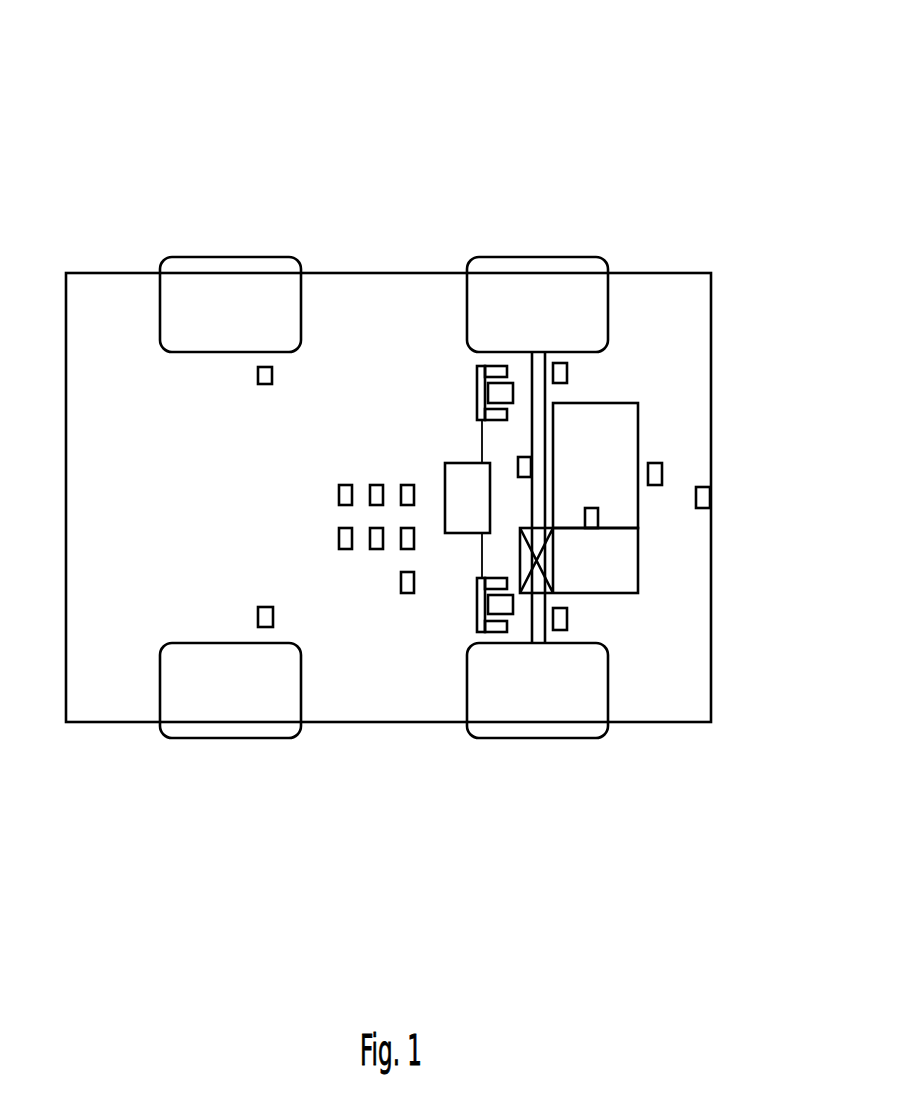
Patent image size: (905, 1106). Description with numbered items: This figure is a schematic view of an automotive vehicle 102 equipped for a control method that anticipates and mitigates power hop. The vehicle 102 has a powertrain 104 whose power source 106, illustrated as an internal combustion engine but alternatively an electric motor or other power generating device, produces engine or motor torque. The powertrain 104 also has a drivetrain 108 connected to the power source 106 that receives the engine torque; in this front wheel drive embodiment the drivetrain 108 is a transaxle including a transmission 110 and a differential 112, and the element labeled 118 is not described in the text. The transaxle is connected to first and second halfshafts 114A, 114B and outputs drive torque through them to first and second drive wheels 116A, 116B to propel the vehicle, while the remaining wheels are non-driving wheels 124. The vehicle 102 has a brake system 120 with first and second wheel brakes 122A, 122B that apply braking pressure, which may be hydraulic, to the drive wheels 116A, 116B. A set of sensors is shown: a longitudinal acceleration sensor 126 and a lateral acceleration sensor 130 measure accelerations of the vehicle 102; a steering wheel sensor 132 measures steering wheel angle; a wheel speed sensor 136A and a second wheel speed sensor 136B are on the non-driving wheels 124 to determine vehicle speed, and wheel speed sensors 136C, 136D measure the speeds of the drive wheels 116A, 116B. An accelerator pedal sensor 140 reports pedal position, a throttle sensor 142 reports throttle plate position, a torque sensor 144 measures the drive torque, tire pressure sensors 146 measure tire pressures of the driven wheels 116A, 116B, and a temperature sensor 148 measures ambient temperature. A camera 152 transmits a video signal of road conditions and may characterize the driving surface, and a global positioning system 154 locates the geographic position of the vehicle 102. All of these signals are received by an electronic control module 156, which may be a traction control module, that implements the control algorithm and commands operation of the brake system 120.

The vehicle 102 is at (710, 150).
The powertrain 104 is at (700, 601).
The power source 106 is at (640, 423).
The drivetrain 108 is at (670, 543).
The transmission 110 is at (638, 593).
The differential 112 is at (548, 578).
The first halfshaft 114A is at (537, 372).
The second halfshaft 114B is at (538, 620).
The first drive wheel 116A is at (487, 266).
The second drive wheel 116B is at (555, 727).
The transfer case 118 is at (562, 568).
The brake system 120 is at (451, 450).
The first wheel brake 122A is at (478, 378).
The second wheel brake 122B is at (475, 600).
The non-driving wheels 124 is at (213, 270).
The longitudinal acceleration sensor 126 is at (407, 490).
The lateral acceleration sensor 130 is at (377, 488).
The steering wheel sensor 132 is at (414, 545).
The wheel speed sensor 136A is at (258, 378).
The second wheel speed sensor 136B is at (260, 612).
The wheel speed sensor 136C is at (567, 373).
The wheel speed sensor 136D is at (570, 624).
The accelerator pedal sensor 140 is at (378, 548).
The throttle sensor 142 is at (658, 468).
The torque sensor 144 is at (523, 457).
The tire pressure sensors 146 is at (508, 308).
The temperature sensor 148 is at (343, 542).
The camera 152 is at (710, 500).
The global positioning system 154 is at (347, 485).
The electronic control module 156 is at (405, 593).